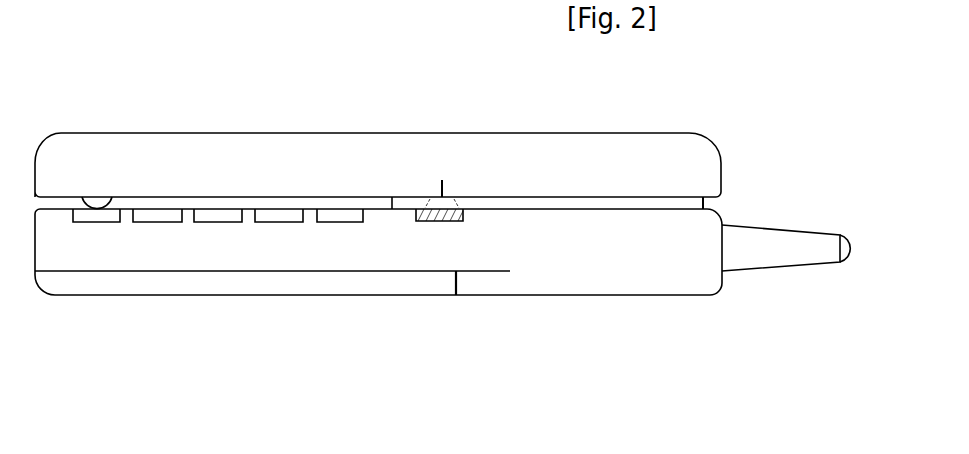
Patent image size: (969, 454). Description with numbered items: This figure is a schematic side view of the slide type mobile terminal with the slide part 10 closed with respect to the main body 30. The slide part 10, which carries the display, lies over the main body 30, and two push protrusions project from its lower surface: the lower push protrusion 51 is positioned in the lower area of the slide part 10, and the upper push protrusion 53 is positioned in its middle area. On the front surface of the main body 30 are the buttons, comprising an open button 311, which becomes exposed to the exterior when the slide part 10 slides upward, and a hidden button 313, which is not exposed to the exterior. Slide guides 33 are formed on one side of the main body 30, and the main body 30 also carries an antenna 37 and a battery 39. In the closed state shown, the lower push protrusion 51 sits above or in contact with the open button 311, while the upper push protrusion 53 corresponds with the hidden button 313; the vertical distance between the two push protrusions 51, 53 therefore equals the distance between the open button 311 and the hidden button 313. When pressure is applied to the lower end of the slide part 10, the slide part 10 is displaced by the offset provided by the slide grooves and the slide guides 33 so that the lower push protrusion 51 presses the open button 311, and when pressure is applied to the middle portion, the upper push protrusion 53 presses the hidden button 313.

The slide part 10 is at (553, 137).
The main body 30 is at (603, 272).
The slide guides 33 is at (703, 205).
The antenna 37 is at (763, 252).
The battery 39 is at (347, 285).
The lower push protrusion 51 is at (97, 197).
The upper push protrusion 53 is at (442, 182).
The open button 311 is at (92, 222).
The hidden button 313 is at (440, 222).